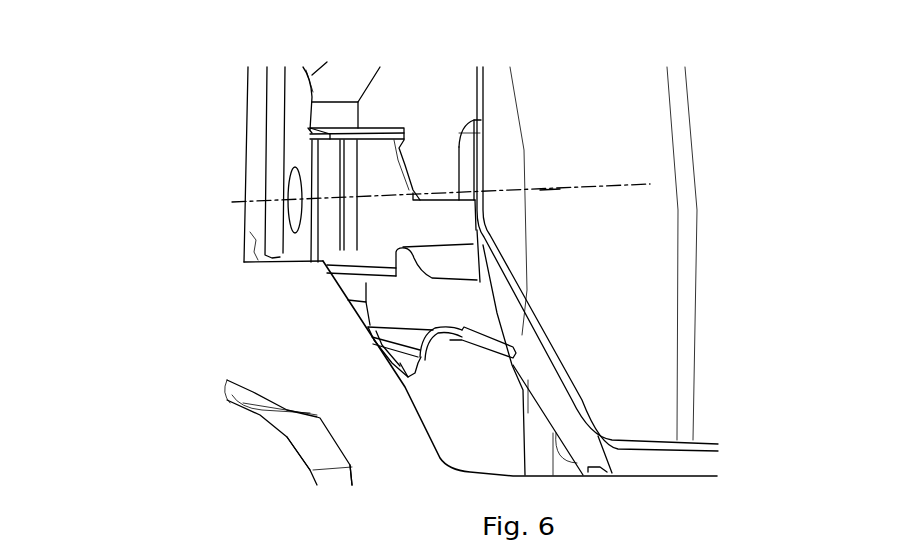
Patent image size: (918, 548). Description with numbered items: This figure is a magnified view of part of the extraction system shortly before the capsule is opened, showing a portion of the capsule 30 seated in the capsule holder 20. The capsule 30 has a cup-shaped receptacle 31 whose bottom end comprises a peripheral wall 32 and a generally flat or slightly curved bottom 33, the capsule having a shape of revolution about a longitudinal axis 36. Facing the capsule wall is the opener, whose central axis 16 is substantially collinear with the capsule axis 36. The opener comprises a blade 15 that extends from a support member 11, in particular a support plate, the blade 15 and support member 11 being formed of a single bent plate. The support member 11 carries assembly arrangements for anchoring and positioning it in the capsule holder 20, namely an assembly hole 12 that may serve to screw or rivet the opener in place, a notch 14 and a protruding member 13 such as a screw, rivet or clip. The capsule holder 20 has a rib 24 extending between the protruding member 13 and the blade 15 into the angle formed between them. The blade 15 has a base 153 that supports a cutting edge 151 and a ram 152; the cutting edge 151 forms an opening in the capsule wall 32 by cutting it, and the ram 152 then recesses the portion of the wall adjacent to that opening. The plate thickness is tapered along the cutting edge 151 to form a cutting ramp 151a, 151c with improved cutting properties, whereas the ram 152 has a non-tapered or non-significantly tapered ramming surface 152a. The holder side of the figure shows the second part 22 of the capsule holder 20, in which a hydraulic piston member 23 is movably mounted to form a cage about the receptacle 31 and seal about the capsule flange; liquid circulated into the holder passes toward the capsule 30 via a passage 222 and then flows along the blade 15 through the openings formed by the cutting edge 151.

The capsule holder 20 is at (139, 67).
The support member 11 is at (277, 103).
The assembly hole 12 is at (290, 213).
The protruding member 13 is at (320, 74).
The notch 14 is at (312, 132).
The blade 15 is at (398, 183).
The central axis 16 is at (547, 190).
The second part 22 is at (233, 432).
The passage 222 is at (307, 433).
The hydraulic piston member 23 is at (368, 440).
The rib 24 is at (344, 120).
The capsule 30 is at (627, 49).
The receptacle 31 is at (643, 443).
The peripheral wall 32 is at (556, 362).
The bottom 33 is at (497, 145).
The longitudinal axis 36 is at (550, 190).
The cutting edge 151 is at (462, 222).
The cutting ramp 151a is at (498, 350).
The cutting ramp 151c is at (430, 338).
The ram 152 is at (411, 372).
The ramming surface 152a is at (417, 368).
The base 153 is at (377, 237).